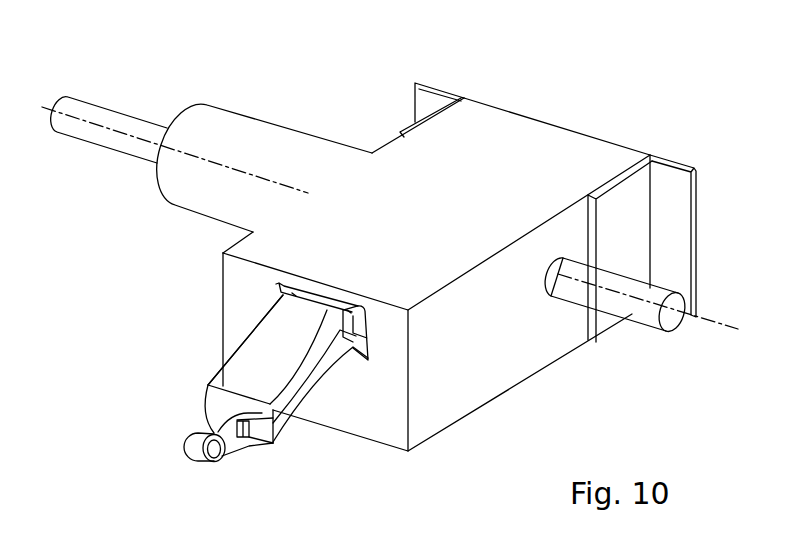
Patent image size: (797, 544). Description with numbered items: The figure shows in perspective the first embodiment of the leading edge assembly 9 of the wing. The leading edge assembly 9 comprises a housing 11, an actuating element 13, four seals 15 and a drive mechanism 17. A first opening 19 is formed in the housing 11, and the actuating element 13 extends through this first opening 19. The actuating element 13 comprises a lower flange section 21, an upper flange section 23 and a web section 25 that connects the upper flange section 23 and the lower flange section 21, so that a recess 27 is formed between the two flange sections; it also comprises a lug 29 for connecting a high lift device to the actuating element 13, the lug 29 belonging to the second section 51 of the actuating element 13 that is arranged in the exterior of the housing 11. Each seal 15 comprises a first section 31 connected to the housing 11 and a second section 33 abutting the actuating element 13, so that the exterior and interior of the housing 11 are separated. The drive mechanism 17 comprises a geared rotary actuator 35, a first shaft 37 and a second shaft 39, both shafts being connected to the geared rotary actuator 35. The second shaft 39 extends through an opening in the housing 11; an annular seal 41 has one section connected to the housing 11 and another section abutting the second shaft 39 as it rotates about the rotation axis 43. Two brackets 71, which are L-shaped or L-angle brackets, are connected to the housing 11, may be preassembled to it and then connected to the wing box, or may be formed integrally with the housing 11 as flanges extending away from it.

The leading edge assembly 9 is at (592, 103).
The housing 11 is at (525, 125).
The actuating element 13 is at (253, 378).
The seal 15 is at (249, 312).
The drive mechanism 17 is at (206, 186).
The first opening 19 is at (255, 294).
The lower flange section 21 is at (263, 442).
The upper flange section 23 is at (298, 384).
The web section 25 is at (247, 439).
The recess 27 is at (255, 436).
The lug 29 is at (176, 432).
The first section 31 is at (313, 294).
The second section 33 is at (295, 295).
The geared rotary actuator 35 is at (263, 132).
The first shaft 37 is at (93, 133).
The second shaft 39 is at (645, 313).
The annular seal 41 is at (541, 300).
The rotation axis 43 is at (712, 319).
The second section 51 is at (257, 343).
The bracket 71 is at (437, 97).